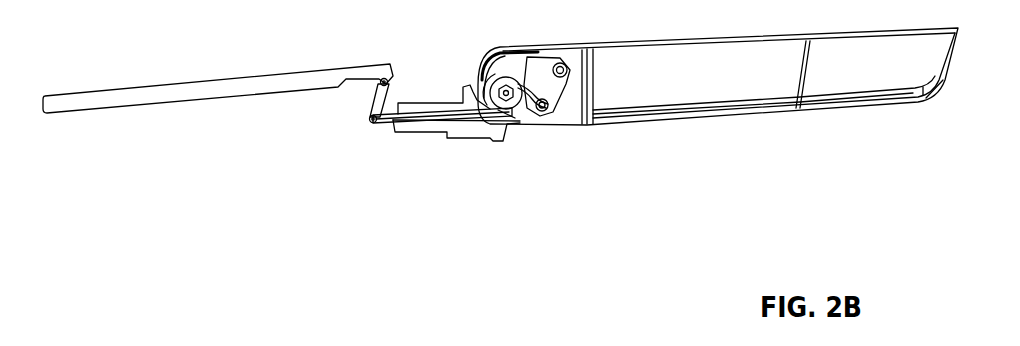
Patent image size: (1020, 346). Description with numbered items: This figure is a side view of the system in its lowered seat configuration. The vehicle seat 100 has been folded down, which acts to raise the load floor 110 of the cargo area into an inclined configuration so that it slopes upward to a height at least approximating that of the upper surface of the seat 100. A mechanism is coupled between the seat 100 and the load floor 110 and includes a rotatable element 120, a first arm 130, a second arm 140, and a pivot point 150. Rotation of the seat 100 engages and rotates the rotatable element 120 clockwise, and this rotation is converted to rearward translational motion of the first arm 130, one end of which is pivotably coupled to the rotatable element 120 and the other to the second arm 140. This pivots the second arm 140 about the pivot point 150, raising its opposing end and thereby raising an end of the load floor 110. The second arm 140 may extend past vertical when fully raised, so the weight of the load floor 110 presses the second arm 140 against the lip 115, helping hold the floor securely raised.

The vehicle seat 100 is at (658, 42).
The load floor 110 is at (258, 77).
The lip 115 is at (392, 77).
The rotatable element 120 is at (530, 128).
The first arm 130 is at (455, 124).
The second arm 140 is at (370, 93).
The pivot point 150 is at (392, 100).